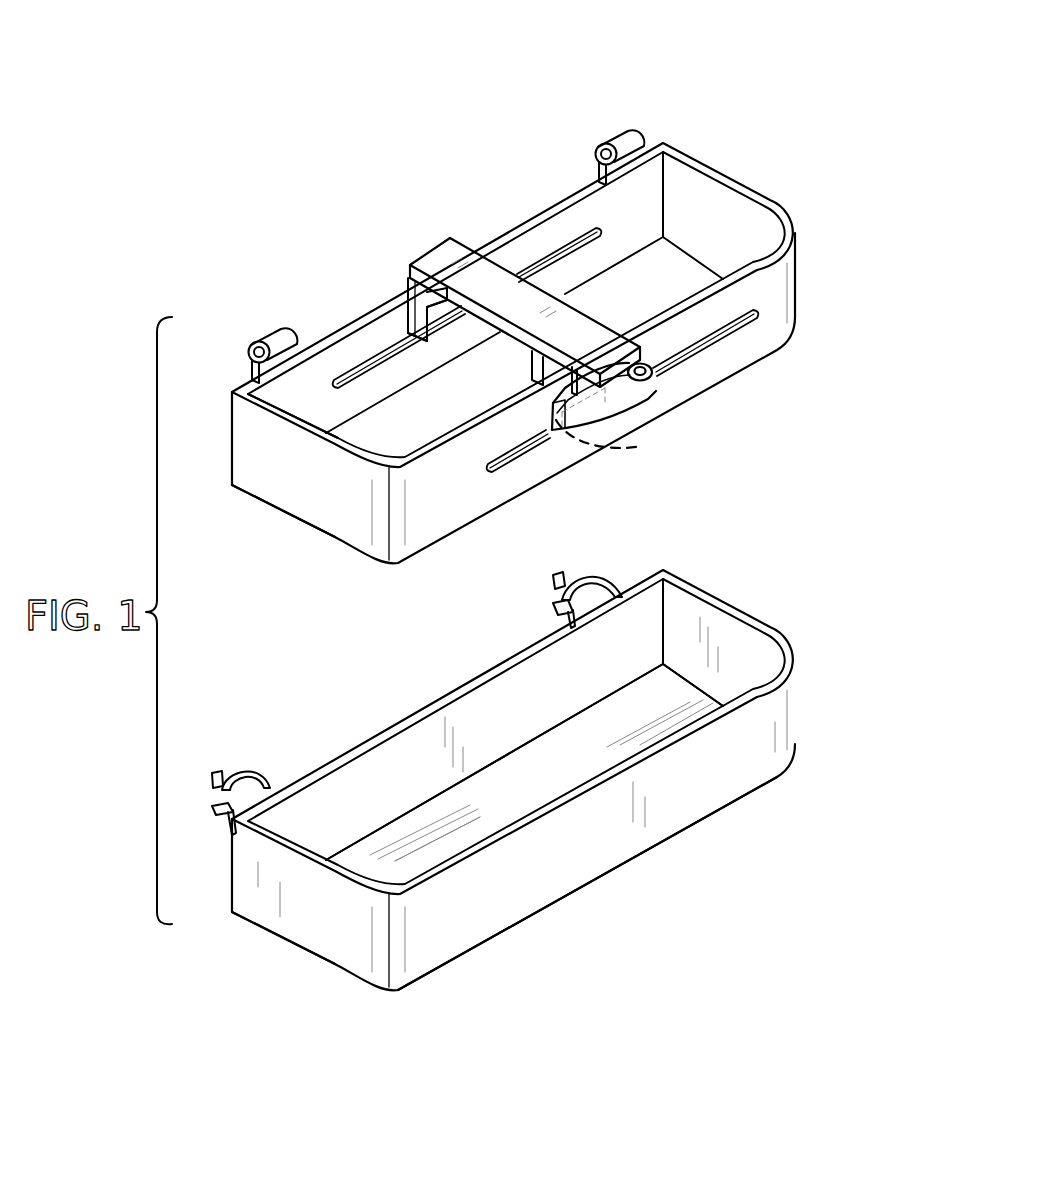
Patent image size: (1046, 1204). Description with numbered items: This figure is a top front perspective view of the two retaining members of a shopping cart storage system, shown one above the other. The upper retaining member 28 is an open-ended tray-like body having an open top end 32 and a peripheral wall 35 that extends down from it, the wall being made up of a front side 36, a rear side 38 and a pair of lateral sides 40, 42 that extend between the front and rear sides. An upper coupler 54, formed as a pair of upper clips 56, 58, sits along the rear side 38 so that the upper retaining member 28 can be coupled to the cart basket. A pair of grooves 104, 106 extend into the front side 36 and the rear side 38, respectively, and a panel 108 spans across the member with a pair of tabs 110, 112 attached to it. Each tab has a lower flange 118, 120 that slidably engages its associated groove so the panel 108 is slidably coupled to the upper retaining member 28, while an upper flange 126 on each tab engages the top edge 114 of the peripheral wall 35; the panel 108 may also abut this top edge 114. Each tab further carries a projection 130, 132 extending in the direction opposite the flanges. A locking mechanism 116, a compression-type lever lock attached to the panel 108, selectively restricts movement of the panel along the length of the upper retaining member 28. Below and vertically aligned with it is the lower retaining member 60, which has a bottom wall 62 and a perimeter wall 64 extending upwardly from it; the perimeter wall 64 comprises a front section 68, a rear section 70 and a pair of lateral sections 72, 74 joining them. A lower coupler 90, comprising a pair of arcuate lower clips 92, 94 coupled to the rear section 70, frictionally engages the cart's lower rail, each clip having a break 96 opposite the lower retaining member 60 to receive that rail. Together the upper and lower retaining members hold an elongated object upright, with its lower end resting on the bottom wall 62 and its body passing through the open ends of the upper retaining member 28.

The upper retaining member 28 is at (808, 224).
The open top end 32 is at (676, 130).
The peripheral wall 35 is at (287, 497).
The front side 36 is at (755, 350).
The rear side 38 is at (323, 363).
The lateral side 40 is at (273, 484).
The lateral side 42 is at (747, 212).
The upper coupler 54 is at (238, 338).
The upper clip 56 is at (268, 335).
The upper clip 58 is at (613, 137).
The lower retaining member 60 is at (802, 622).
The bottom wall 62 is at (410, 857).
The perimeter wall 64 is at (320, 928).
The front section 68 is at (632, 842).
The rear section 70 is at (332, 793).
The lateral section 72 is at (263, 917).
The lateral section 74 is at (737, 647).
The lower coupler 90 is at (615, 556).
The lower clip 92 is at (255, 775).
The lower clip 94 is at (541, 599).
The break 96 is at (219, 782).
The groove 104 is at (363, 370).
The groove 106 is at (705, 352).
The panel 108 is at (468, 257).
The tab 110 is at (433, 359).
The tab 112 is at (527, 379).
The top edge 114 is at (710, 177).
The locking mechanism 116 is at (640, 408).
The lower flange 118 is at (362, 363).
The lower flange 120 is at (630, 436).
The upper flange 126 is at (418, 330).
The projection 130 is at (437, 300).
The projection 132 is at (543, 373).